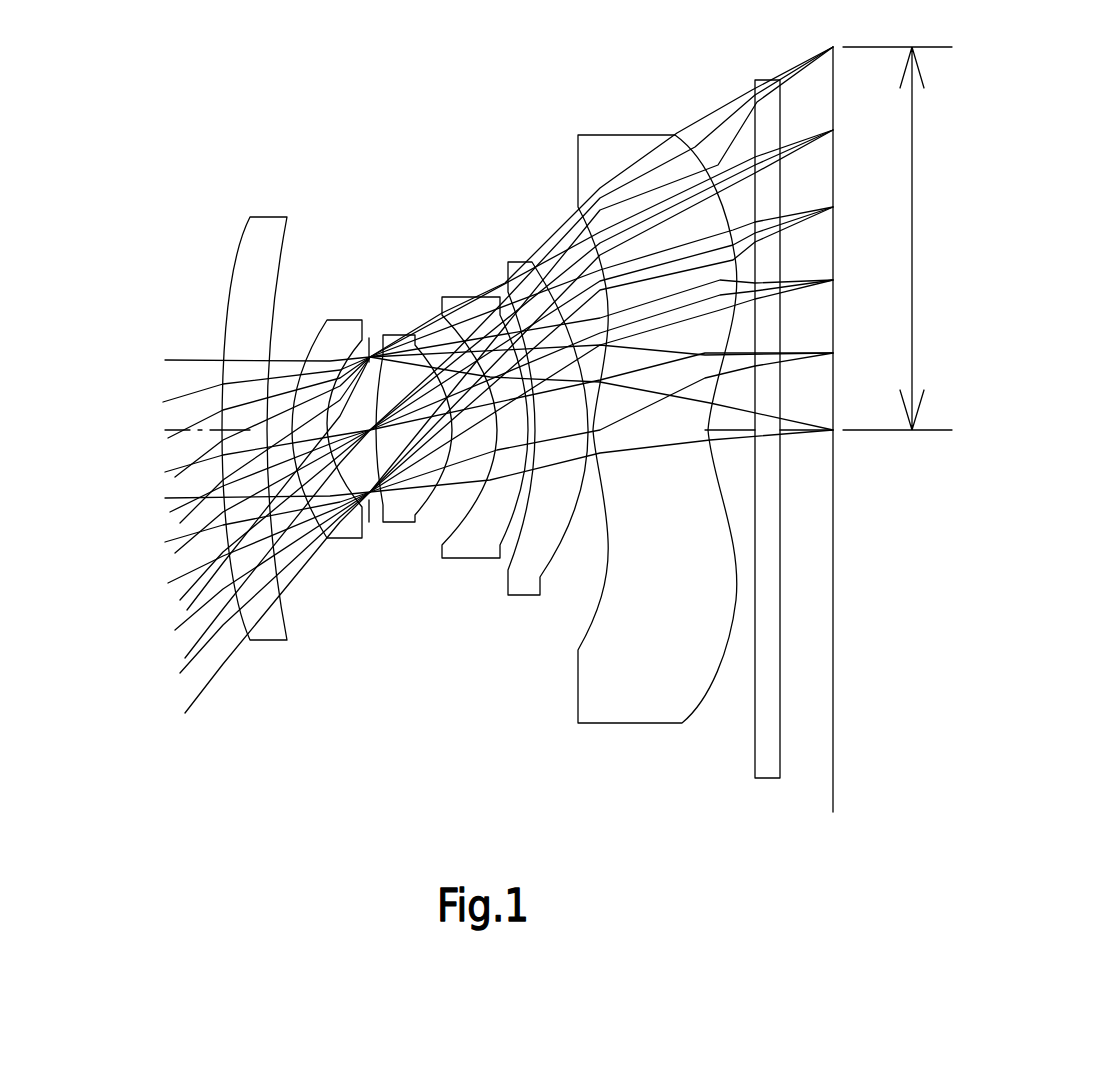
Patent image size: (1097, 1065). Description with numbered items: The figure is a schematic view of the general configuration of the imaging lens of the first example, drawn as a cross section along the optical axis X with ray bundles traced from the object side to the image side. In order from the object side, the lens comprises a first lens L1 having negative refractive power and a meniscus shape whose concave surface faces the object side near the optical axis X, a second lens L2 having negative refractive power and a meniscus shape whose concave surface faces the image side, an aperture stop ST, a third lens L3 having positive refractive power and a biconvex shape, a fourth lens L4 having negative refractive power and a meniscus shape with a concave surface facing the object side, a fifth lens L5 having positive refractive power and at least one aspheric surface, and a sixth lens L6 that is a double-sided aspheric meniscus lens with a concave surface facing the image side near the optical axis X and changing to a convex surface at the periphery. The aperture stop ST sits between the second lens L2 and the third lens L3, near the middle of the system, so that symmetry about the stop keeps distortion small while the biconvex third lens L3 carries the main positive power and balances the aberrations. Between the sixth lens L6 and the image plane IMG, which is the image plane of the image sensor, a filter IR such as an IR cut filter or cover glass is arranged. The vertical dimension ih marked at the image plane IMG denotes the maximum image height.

The first lens L1 is at (245, 232).
The second lens L2 is at (327, 320).
The third lens L3 is at (400, 334).
The fourth lens L4 is at (447, 297).
The fifth lens L5 is at (522, 262).
The sixth lens L6 is at (595, 135).
The aperture stop ST is at (369, 522).
The filter IR is at (757, 80).
The image plane IMG is at (833, 805).
The optical axis X is at (173, 427).
The maximum image height ih is at (897, 238).